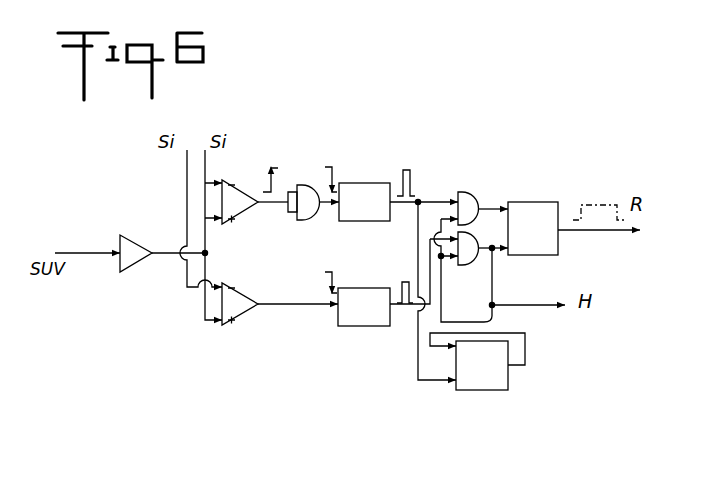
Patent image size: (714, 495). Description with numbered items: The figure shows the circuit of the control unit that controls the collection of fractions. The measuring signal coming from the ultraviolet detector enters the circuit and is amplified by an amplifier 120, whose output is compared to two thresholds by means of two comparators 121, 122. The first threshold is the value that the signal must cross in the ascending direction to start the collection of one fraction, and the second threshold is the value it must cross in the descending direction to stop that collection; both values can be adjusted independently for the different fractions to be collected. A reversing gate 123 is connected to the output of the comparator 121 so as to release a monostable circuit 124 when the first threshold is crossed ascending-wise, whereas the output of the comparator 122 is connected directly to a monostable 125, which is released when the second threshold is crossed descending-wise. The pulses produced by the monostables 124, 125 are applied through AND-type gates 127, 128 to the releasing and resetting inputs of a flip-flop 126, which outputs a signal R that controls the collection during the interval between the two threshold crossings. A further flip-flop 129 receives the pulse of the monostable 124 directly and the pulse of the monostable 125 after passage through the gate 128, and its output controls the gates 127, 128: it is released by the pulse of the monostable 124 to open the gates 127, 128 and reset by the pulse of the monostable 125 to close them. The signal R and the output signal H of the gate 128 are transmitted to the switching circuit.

The amplifier 120 is at (132, 247).
The comparator 121 is at (242, 195).
The comparator 122 is at (245, 297).
The reversing gate 123 is at (302, 194).
The monostable circuit 124 is at (363, 196).
The monostable 125 is at (362, 298).
The flip-flop 126 is at (532, 213).
The AND-type gate 127 is at (470, 197).
The AND-type gate 128 is at (472, 262).
The flip-flop 129 is at (483, 372).